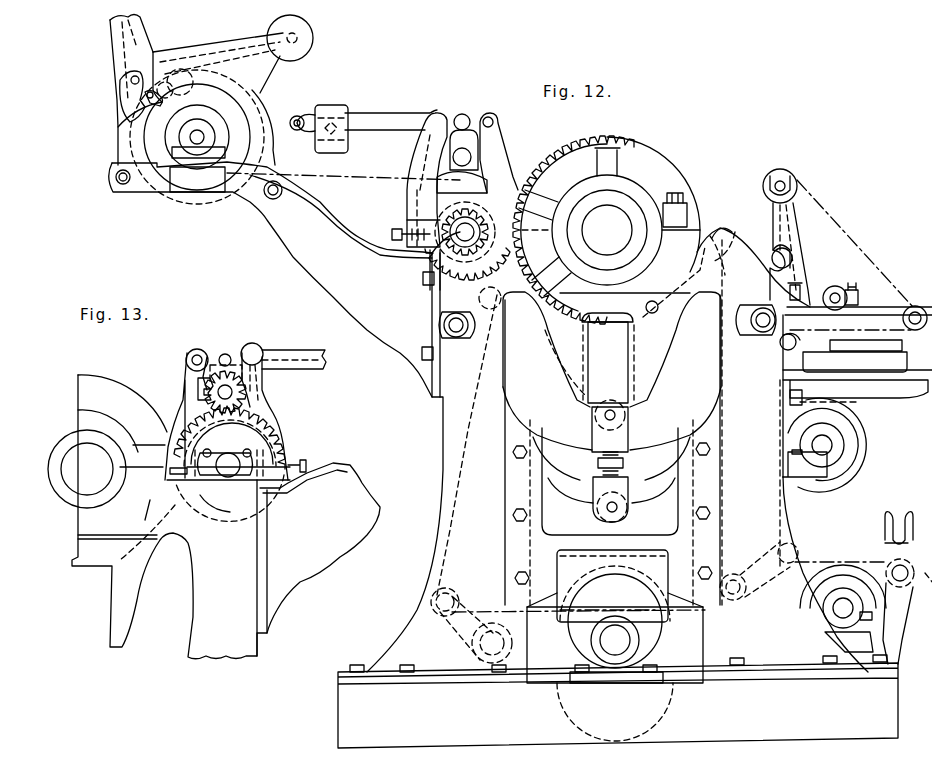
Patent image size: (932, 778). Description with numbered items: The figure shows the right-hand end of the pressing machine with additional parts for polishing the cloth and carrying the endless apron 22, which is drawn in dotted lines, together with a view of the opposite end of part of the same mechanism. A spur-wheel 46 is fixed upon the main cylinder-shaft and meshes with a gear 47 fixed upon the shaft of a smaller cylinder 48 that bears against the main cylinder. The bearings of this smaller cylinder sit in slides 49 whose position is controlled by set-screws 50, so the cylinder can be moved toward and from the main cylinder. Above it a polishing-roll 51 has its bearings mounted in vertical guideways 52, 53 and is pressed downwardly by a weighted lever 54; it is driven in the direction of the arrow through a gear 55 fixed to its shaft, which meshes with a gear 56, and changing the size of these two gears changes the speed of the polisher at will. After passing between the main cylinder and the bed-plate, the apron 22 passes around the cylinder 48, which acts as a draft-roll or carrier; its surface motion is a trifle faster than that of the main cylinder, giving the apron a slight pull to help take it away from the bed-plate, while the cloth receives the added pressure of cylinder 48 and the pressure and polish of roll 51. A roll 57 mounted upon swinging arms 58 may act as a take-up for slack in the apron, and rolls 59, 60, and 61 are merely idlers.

In FIG. 12, the endless apron 22 is at (462, 466).
In FIG. 12, the spur-wheel 46 is at (620, 136).
In FIG. 12, the gear 47 is at (460, 270).
In FIG. 12, the smaller cylinder 48 is at (465, 235).
In FIG. 13, the smaller cylinder 48 is at (237, 507).
In FIG. 12, the slides 49 is at (427, 248).
In FIG. 12, the set-screws 50 is at (393, 231).
In FIG. 13, the set-screws 50 is at (297, 464).
In FIG. 12, the polishing-roll 51 is at (473, 157).
In FIG. 13, the polishing-roll 51 is at (198, 388).
In FIG. 12, the vertical guideway 52 is at (443, 120).
In FIG. 13, the vertical guideway 52 is at (253, 357).
In FIG. 12, the vertical guideway 53 is at (487, 115).
In FIG. 13, the vertical guideway 53 is at (191, 355).
In FIG. 12, the weighted lever 54 is at (393, 122).
In FIG. 13, the weighted lever 54 is at (295, 353).
In FIG. 13, the gear 55 is at (233, 367).
In FIG. 13, the gear 56 is at (260, 423).
In FIG. 12, the roll 57 is at (447, 594).
In FIG. 12, the swinging arms 58 is at (572, 630).
In FIG. 12, the idler roll 59 is at (706, 596).
In FIG. 12, the idler roll 60 is at (722, 232).
In FIG. 12, the idler roll 61 is at (470, 312).